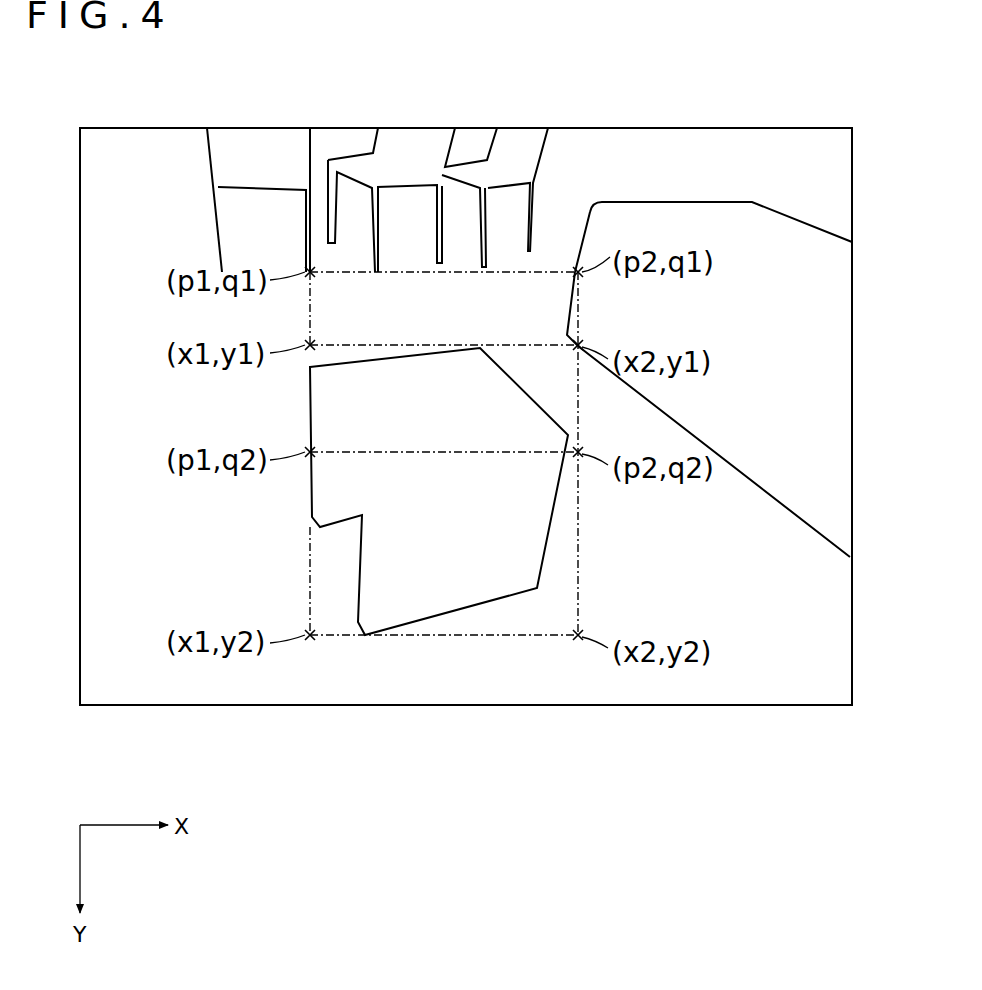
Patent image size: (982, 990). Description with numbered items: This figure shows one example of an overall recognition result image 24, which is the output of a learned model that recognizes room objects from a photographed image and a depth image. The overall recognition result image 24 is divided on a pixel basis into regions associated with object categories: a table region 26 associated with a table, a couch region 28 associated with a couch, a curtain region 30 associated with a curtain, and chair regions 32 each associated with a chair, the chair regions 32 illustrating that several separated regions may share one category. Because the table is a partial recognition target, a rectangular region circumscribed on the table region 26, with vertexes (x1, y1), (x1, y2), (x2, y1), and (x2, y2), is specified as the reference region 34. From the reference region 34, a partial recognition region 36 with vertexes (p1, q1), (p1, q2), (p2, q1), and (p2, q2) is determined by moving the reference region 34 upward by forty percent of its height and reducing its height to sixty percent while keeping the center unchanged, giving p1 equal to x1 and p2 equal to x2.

The overall recognition result image 24 is at (767, 128).
The table region 26 is at (323, 398).
The couch region 28 is at (838, 397).
The curtain region 30 is at (838, 182).
The chair regions 32 is at (396, 143).
The reference region 34 is at (582, 553).
The partial recognition region 36 is at (307, 318).